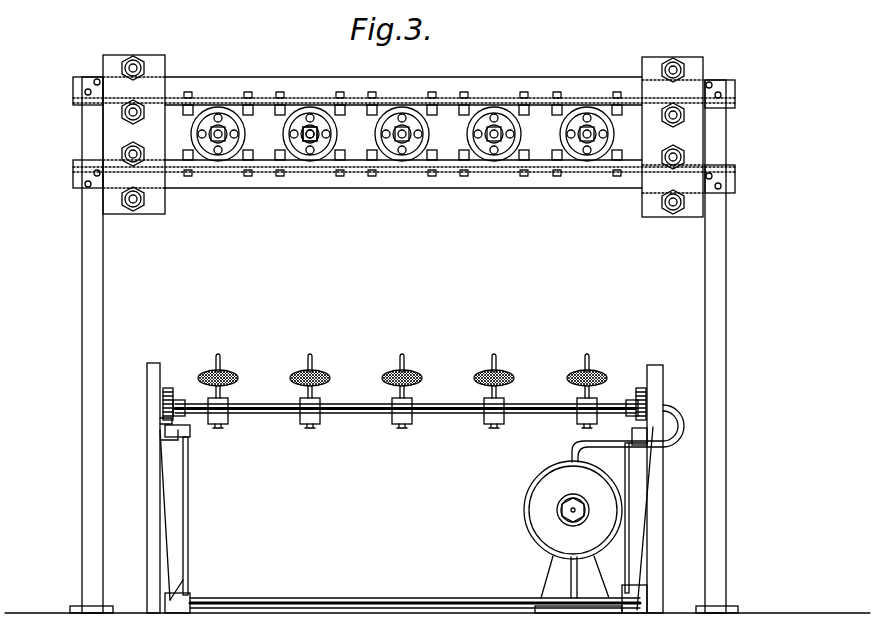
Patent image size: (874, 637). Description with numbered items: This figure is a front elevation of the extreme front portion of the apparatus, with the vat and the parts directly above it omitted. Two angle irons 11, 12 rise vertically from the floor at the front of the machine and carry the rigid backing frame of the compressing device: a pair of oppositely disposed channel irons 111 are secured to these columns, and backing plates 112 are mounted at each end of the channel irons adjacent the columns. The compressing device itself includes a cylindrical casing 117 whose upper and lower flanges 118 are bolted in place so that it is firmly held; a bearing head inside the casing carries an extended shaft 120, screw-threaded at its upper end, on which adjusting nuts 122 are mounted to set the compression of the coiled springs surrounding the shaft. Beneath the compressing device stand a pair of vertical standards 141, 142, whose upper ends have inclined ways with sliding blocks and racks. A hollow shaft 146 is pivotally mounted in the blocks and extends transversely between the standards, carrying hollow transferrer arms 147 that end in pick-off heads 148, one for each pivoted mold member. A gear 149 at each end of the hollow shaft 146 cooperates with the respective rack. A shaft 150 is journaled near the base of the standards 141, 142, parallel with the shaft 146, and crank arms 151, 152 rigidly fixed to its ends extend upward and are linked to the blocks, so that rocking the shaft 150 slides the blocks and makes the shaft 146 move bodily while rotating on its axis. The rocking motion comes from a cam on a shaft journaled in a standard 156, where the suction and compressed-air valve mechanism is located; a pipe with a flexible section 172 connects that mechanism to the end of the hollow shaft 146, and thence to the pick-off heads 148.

The angle iron 11 is at (82, 385).
The angle iron 12 is at (727, 333).
The channel irons 111 is at (73, 80).
The backing plates 112 is at (168, 208).
The cylindrical casing 117 is at (290, 134).
The flanges 118 is at (341, 118).
The shaft 120 is at (307, 141).
The adjusting nuts 122 is at (318, 143).
The vertical standard 141 is at (657, 563).
The vertical standard 142 is at (147, 513).
The hollow shaft 146 is at (288, 415).
The transferrer arms 147 is at (224, 393).
The pick-off heads 148 is at (229, 368).
The gear 149 is at (170, 386).
The shaft 150 is at (402, 586).
The crank arm 151 is at (188, 531).
The crank arm 152 is at (628, 542).
The standard 156 is at (553, 568).
The flexible section 172 is at (670, 415).